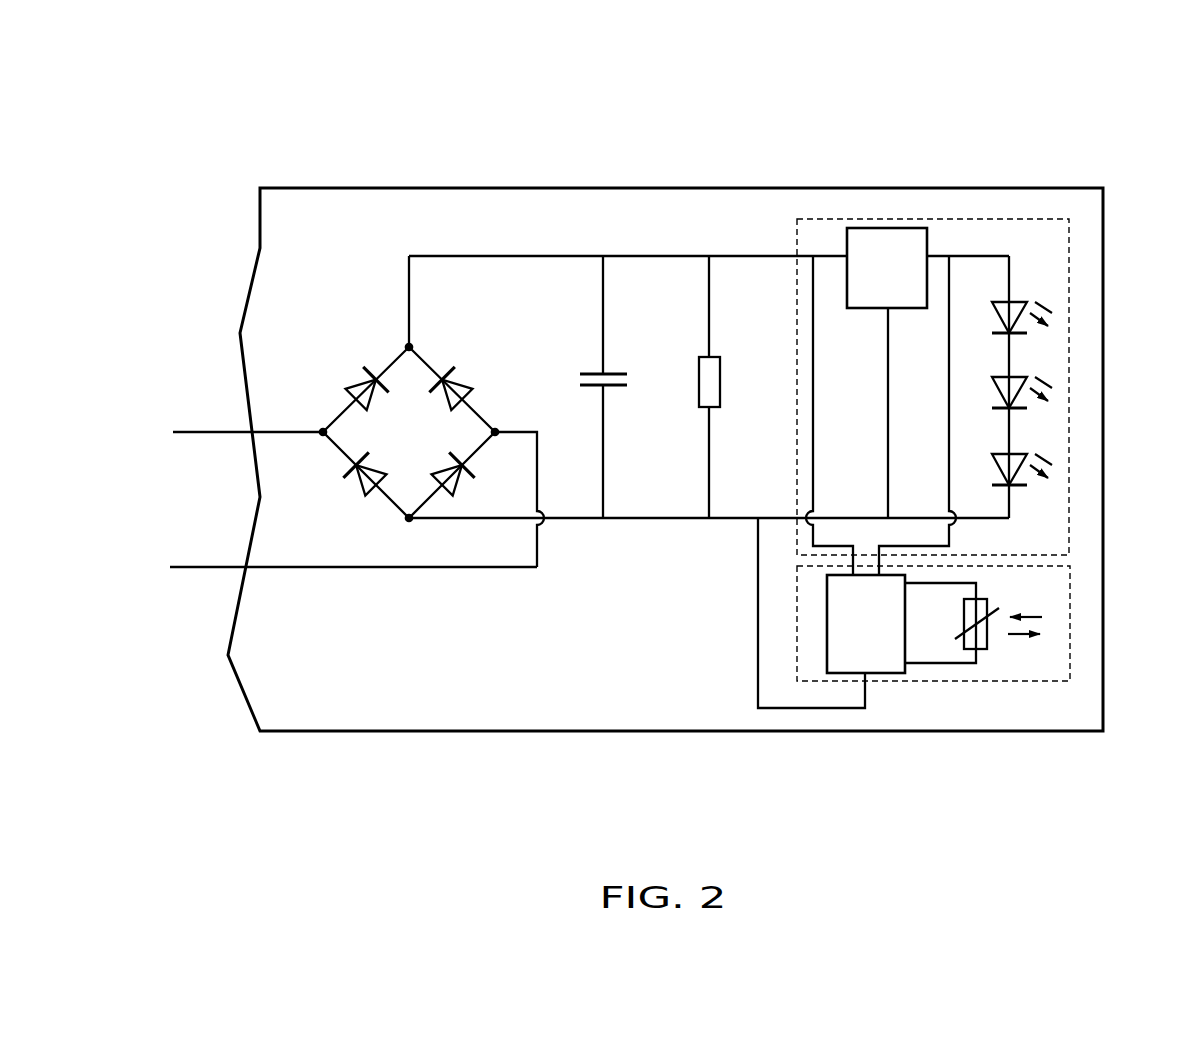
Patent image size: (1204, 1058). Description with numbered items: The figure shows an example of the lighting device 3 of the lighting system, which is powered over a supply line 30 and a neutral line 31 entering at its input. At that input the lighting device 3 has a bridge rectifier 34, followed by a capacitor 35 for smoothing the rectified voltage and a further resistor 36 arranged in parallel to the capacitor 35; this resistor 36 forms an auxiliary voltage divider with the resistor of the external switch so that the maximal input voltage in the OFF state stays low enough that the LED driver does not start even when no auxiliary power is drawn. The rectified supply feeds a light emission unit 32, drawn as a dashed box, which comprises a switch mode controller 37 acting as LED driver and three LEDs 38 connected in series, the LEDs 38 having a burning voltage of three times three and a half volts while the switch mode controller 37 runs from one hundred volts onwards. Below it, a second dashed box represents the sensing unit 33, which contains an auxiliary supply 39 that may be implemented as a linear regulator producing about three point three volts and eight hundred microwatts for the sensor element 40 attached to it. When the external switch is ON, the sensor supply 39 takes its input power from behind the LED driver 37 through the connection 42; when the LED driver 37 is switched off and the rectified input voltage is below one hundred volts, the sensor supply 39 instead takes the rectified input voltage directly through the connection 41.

The lighting device 3 is at (937, 188).
The supply line 30 is at (218, 427).
The neutral line 31 is at (207, 572).
The light emission unit 32 is at (1069, 240).
The sensing unit 33 is at (1070, 613).
The bridge rectifier 34 is at (365, 349).
The capacitor 35 is at (590, 362).
The resistor 36 is at (692, 370).
The switch mode controller 37 is at (885, 228).
The LEDs 38 is at (1029, 287).
The auxiliary supply 39 is at (887, 673).
The sensor element 40 is at (999, 644).
The connection 41 is at (810, 298).
The connection 42 is at (955, 292).